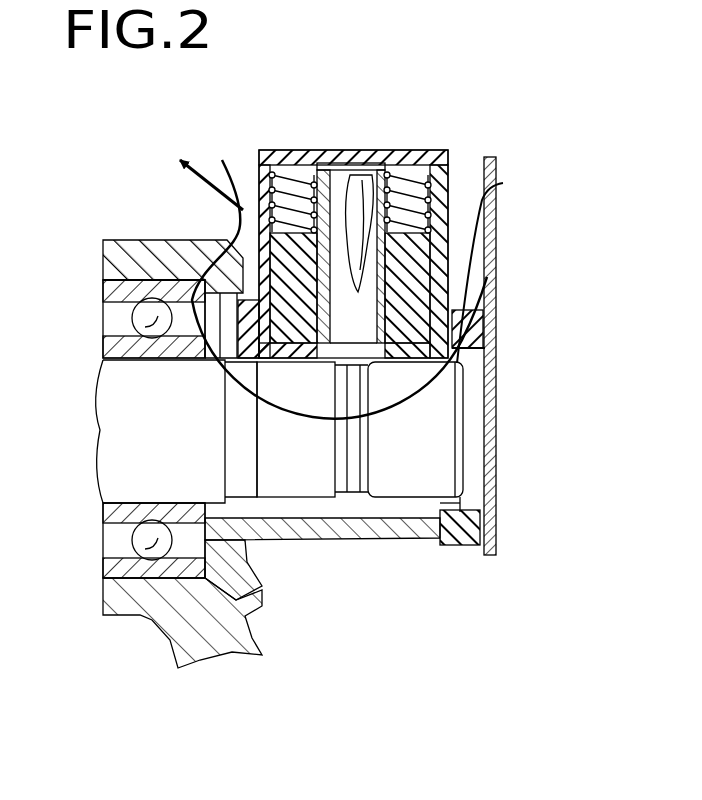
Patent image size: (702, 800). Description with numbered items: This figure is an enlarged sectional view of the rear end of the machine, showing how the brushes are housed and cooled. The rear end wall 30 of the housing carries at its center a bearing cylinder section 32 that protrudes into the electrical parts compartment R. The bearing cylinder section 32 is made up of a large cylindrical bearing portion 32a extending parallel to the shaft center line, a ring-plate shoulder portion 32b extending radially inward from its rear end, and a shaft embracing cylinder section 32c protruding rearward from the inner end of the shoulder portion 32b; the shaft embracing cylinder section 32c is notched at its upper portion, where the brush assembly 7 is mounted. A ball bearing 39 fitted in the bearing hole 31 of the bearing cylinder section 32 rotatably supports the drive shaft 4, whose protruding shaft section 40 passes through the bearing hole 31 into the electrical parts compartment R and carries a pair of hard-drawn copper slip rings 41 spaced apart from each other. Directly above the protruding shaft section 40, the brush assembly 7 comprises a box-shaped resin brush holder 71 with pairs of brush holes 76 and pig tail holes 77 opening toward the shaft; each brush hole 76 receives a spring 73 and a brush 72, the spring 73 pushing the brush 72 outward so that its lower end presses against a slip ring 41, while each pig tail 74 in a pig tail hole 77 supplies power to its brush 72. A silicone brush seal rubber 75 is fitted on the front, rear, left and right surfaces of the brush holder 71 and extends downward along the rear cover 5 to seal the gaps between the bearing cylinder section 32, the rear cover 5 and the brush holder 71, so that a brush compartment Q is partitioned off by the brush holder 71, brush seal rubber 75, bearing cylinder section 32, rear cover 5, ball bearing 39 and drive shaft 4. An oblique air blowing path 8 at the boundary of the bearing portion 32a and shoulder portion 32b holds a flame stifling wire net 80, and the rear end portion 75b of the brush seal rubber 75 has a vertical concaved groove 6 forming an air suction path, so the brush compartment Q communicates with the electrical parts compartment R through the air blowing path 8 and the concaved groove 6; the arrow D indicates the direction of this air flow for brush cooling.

The drive shaft 4 is at (130, 460).
The rear cover 5 is at (492, 245).
The concaved groove 6 is at (473, 292).
The brush assembly 7 is at (377, 204).
The air blowing path 8 is at (135, 318).
The rear end wall 30 is at (215, 652).
The bearing hole 31 is at (108, 283).
The bearing cylinder section 32 is at (158, 263).
The bearing portion 32a is at (158, 250).
The shoulder portion 32b is at (256, 586).
The shaft embracing cylinder section 32c is at (432, 545).
The ball bearing 39 is at (110, 612).
The protruding shaft section 40 is at (357, 477).
The slip rings 41 is at (303, 477).
The brush holder 71 is at (432, 163).
The brushes 72 is at (360, 436).
The spring 73 is at (296, 168).
The pig tail 74 is at (368, 170).
The brush seal rubber 75 is at (242, 342).
The rear end portion of the brush seal rubber 75b is at (495, 347).
The brush holes 76 is at (293, 288).
The pig tail holes 77 is at (352, 318).
The flame stifling wire net 80 is at (339, 270).
The direction D is at (191, 166).
The electrical parts compartment R is at (336, 98).
The brush compartment Q is at (468, 470).